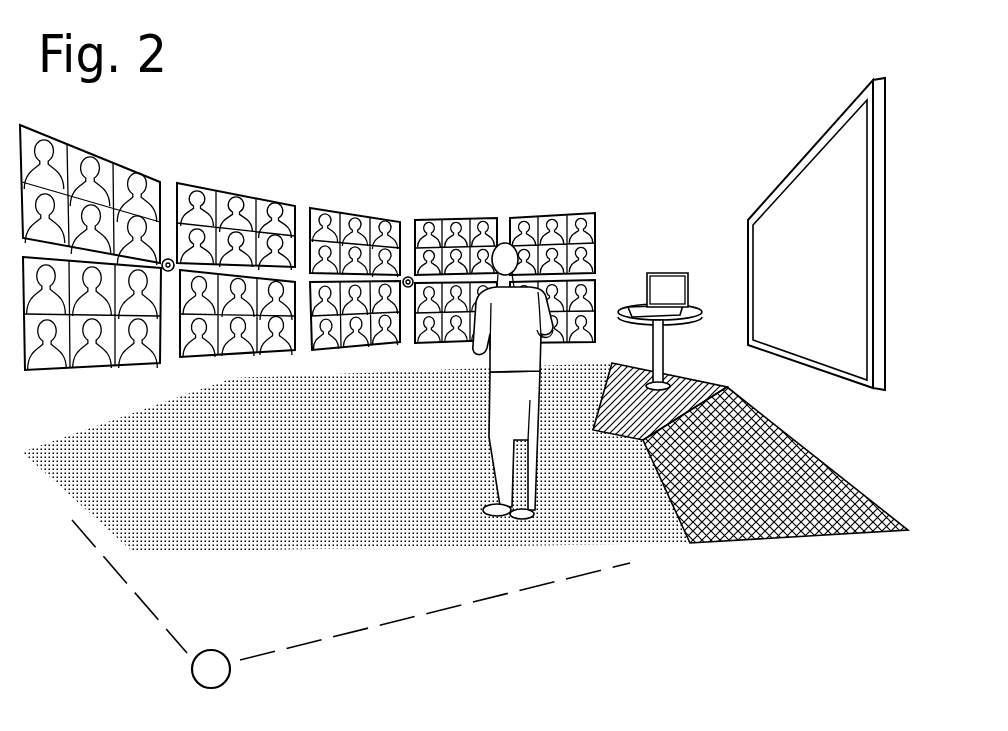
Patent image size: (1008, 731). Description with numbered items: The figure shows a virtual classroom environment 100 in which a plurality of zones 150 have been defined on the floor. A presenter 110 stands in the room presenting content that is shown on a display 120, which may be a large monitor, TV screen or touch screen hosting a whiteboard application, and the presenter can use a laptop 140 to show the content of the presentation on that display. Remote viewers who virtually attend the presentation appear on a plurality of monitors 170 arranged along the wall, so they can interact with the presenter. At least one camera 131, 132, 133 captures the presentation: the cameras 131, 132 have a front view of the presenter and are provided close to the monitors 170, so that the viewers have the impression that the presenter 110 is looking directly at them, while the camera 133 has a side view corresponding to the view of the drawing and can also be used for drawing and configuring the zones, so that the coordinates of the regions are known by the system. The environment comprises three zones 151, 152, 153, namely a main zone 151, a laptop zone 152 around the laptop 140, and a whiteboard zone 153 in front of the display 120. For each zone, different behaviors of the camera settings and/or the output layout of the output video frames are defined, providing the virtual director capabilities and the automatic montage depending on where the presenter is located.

The environment 100 is at (480, 150).
The presenter 110 is at (512, 437).
The display 120 is at (827, 160).
The camera 131 is at (168, 258).
The camera 132 is at (408, 276).
The camera 133 is at (198, 668).
The laptop 140 is at (678, 290).
The zones 150 is at (357, 497).
The main zone 151 is at (356, 457).
The laptop zone 152 is at (660, 401).
The whiteboard zone 153 is at (775, 465).
The monitors 170 is at (327, 212).